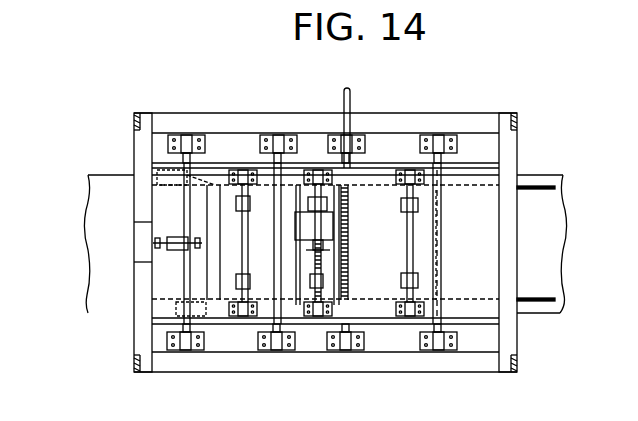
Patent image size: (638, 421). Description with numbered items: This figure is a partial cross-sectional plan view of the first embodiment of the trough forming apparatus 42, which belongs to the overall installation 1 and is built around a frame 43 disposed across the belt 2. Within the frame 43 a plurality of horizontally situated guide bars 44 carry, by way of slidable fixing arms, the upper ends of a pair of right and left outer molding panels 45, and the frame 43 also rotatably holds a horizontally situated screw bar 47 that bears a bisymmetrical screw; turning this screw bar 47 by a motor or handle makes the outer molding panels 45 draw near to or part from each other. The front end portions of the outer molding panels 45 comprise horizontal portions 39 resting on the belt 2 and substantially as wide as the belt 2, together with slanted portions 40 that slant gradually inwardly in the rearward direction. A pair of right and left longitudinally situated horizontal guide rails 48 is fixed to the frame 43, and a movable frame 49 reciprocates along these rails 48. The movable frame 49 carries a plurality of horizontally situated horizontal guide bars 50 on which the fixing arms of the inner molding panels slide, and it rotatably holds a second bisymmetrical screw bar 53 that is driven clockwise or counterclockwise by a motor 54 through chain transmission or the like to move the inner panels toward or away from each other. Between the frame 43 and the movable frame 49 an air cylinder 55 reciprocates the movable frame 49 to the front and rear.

The apparatus 1 is at (78, 252).
The belt 2 is at (92, 197).
The horizontal portions 39 is at (170, 300).
The slanted portions 40 is at (210, 328).
The trough forming apparatus 42 is at (180, 110).
The frame 43 is at (240, 356).
The guide bars 44 is at (277, 280).
The outer molding panels 45 is at (366, 313).
The screw bar 47 is at (344, 118).
The horizontal guide rails 48 is at (489, 158).
The movable frame 49 is at (440, 244).
The horizontal guide bars 50 is at (242, 252).
The screw bar 53 is at (347, 267).
The motor 54 is at (300, 227).
The air cylinder 55 is at (172, 236).